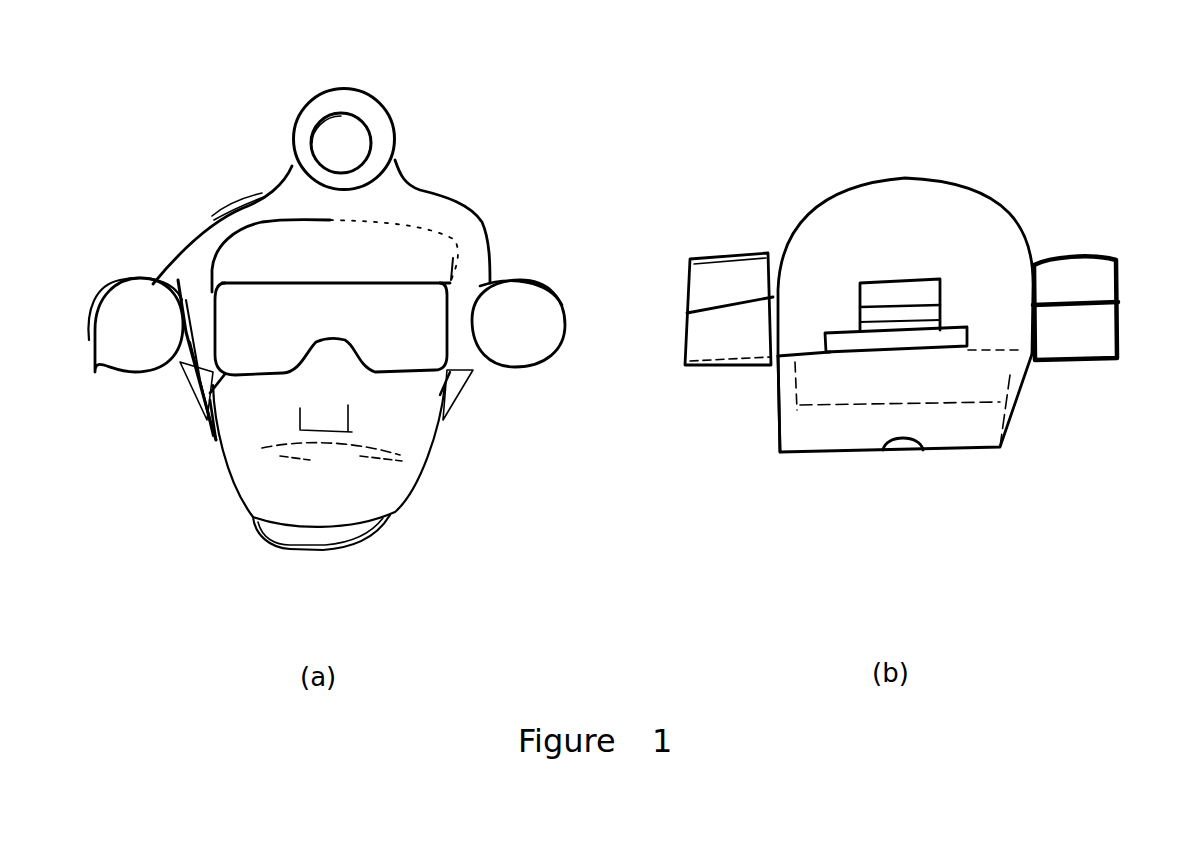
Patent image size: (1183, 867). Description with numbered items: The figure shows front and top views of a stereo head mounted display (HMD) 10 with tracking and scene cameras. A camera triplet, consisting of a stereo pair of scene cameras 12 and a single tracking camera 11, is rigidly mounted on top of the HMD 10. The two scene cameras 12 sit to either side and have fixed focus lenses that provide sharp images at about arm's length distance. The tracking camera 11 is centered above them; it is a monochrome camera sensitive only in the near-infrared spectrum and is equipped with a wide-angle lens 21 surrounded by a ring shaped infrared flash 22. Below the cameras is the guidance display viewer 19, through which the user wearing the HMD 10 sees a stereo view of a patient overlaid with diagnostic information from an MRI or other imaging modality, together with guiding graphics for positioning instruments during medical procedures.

The stereo head mounted display 10 is at (820, 86).
The tracking camera 11 is at (312, 98).
The scene cameras 12 is at (126, 264).
The guidance display viewer 19 is at (218, 400).
The wide-angle lens 21 is at (330, 134).
The ring shaped infrared flash 22 is at (301, 149).